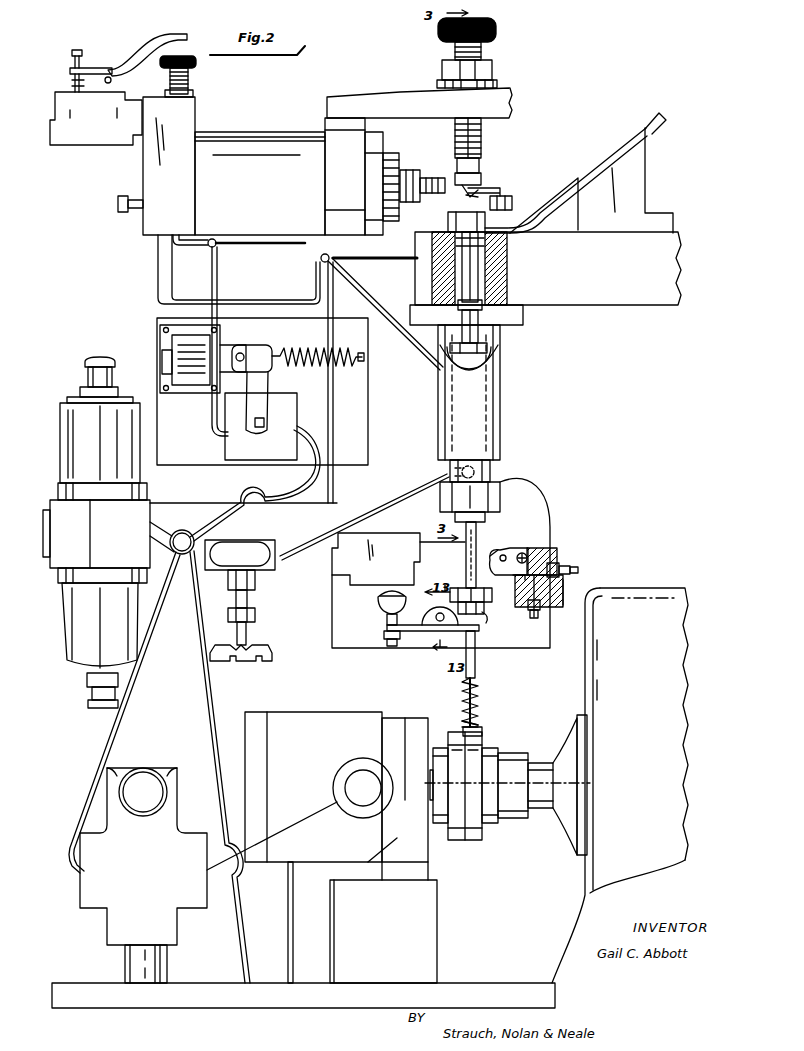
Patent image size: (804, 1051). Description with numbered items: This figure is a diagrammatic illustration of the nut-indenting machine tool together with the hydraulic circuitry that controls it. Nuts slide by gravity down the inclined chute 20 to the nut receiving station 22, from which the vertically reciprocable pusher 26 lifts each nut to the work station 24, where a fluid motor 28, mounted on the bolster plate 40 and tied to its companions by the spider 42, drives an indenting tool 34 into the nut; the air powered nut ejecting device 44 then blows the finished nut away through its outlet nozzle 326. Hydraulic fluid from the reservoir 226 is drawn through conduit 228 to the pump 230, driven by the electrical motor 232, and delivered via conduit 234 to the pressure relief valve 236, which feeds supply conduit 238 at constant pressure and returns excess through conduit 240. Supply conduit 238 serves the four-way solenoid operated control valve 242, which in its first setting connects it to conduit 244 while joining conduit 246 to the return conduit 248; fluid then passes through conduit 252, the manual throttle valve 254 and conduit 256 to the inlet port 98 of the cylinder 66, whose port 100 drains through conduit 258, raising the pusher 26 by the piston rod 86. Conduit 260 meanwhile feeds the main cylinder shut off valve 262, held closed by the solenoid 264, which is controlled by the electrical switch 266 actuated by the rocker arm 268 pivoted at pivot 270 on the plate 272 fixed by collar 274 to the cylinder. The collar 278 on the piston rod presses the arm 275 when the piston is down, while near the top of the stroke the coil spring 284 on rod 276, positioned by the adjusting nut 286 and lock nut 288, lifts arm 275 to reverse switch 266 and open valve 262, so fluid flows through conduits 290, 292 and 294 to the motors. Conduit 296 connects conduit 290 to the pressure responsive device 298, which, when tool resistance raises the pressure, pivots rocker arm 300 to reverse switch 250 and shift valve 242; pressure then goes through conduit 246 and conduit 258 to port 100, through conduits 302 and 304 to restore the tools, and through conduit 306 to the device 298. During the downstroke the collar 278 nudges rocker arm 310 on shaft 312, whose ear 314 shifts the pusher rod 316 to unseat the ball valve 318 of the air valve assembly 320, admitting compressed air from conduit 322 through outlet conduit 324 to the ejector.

The downwardly inclined chute 20 is at (657, 121).
The nut receiving station 22 is at (438, 229).
The work station 24 is at (493, 153).
The pusher 26 is at (485, 292).
The fluid motor 28 is at (268, 140).
The indenting tool 34 is at (436, 175).
The bolster plate 40 is at (632, 298).
The spider 42 is at (405, 92).
The air powered nut ejecting device 44 is at (497, 190).
The cylinder 66 is at (492, 468).
The piston rod 86 is at (466, 558).
The inlet port 98 is at (472, 470).
The port 100 is at (480, 378).
The reservoir 226 is at (323, 1005).
The conduit 228 is at (293, 905).
The pump 230 is at (318, 697).
The electrical motor 232 is at (590, 680).
The conduit 234 is at (291, 821).
The pressure relief valve 236 is at (107, 905).
The supply conduit 238 is at (72, 805).
The conduit 240 is at (170, 962).
The four-way solenoid operated control valve 242 is at (58, 495).
The conduit 244 is at (178, 532).
The conduit 246 is at (163, 503).
The return conduit 248 is at (190, 604).
The switch 250 is at (55, 100).
The conduit 252 is at (211, 550).
The manual throttle valve 254 is at (263, 540).
The conduit 256 is at (390, 500).
The conduit 258 is at (418, 353).
The conduit 260 is at (282, 488).
The main cylinder shut off valve 262 is at (282, 397).
The solenoid 264 is at (172, 340).
The electrical switch 266 is at (395, 535).
The rocker arm 268 is at (413, 643).
The pivot 270 is at (437, 622).
The plate 272 is at (336, 645).
The collar 274 is at (505, 487).
The arm 275 is at (480, 632).
The rod 276 is at (476, 670).
The collar 278 is at (485, 620).
The coil spring 284 is at (480, 690).
The adjusting nut 286 is at (480, 713).
The lock nut 288 is at (483, 731).
The conduit 290 is at (212, 275).
The conduit 292 is at (218, 240).
The conduit 294 is at (229, 250).
The conduit 296 is at (185, 226).
The pressure responsive device 298 is at (143, 165).
The rocker arm 300 is at (130, 54).
The conduit 302 is at (338, 246).
The conduit 304 is at (373, 262).
The conduit 306 is at (316, 268).
The rocker arm 310 is at (500, 548).
The shaft 312 is at (512, 548).
The ear 314 is at (512, 576).
The pusher rod 316 is at (515, 598).
The ball valve 318 is at (565, 560).
The air valve assembly 320 is at (575, 583).
The conduit 322 is at (580, 570).
The outlet conduit 324 is at (540, 617).
The outlet nozzle 326 is at (465, 197).